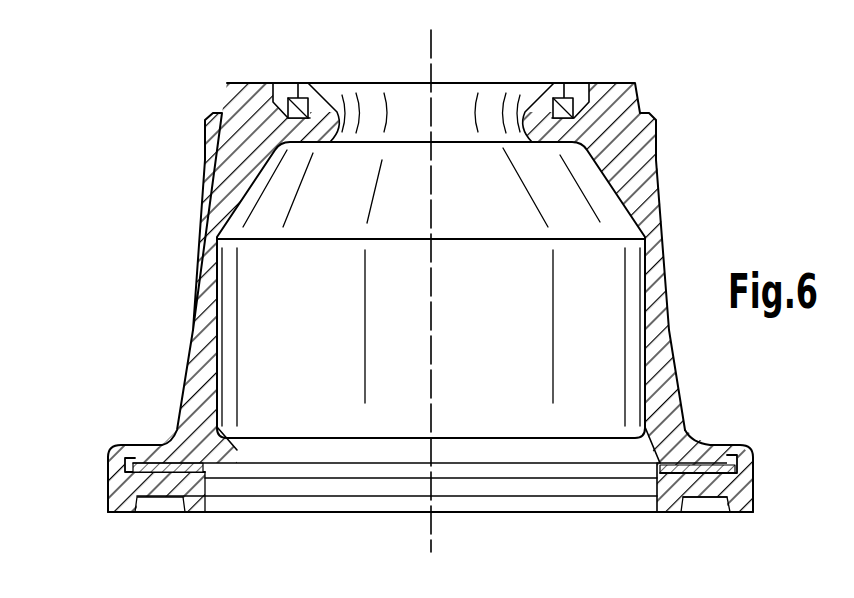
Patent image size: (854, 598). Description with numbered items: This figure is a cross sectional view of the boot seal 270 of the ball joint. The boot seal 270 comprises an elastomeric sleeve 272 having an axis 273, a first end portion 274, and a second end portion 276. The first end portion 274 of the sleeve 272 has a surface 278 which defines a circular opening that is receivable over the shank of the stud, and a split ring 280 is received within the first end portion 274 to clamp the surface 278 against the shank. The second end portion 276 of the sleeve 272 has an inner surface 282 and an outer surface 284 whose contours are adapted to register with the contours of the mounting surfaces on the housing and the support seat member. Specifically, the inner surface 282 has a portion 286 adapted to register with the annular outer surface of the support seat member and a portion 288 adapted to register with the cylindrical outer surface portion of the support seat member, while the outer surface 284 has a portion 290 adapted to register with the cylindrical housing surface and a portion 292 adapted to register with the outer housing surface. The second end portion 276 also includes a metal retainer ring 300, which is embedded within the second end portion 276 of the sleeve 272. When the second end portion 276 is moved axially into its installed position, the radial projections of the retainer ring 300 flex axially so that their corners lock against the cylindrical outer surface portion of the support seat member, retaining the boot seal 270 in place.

The boot seal 270 is at (144, 141).
The elastomeric sleeve 272 is at (218, 190).
The axis 273 is at (426, 52).
The first end portion 274 is at (237, 103).
The second end portion 276 is at (122, 488).
The surface 278 is at (520, 105).
The split ring 280 is at (566, 100).
The inner surface 282 is at (214, 483).
The outer surface 284 is at (150, 520).
The portion of inner surface 286 is at (623, 447).
The portion of inner surface 288 is at (658, 483).
The portion of outer surface 290 is at (687, 499).
The portion of outer surface 292 is at (733, 513).
The metal retainer ring 300 is at (130, 462).